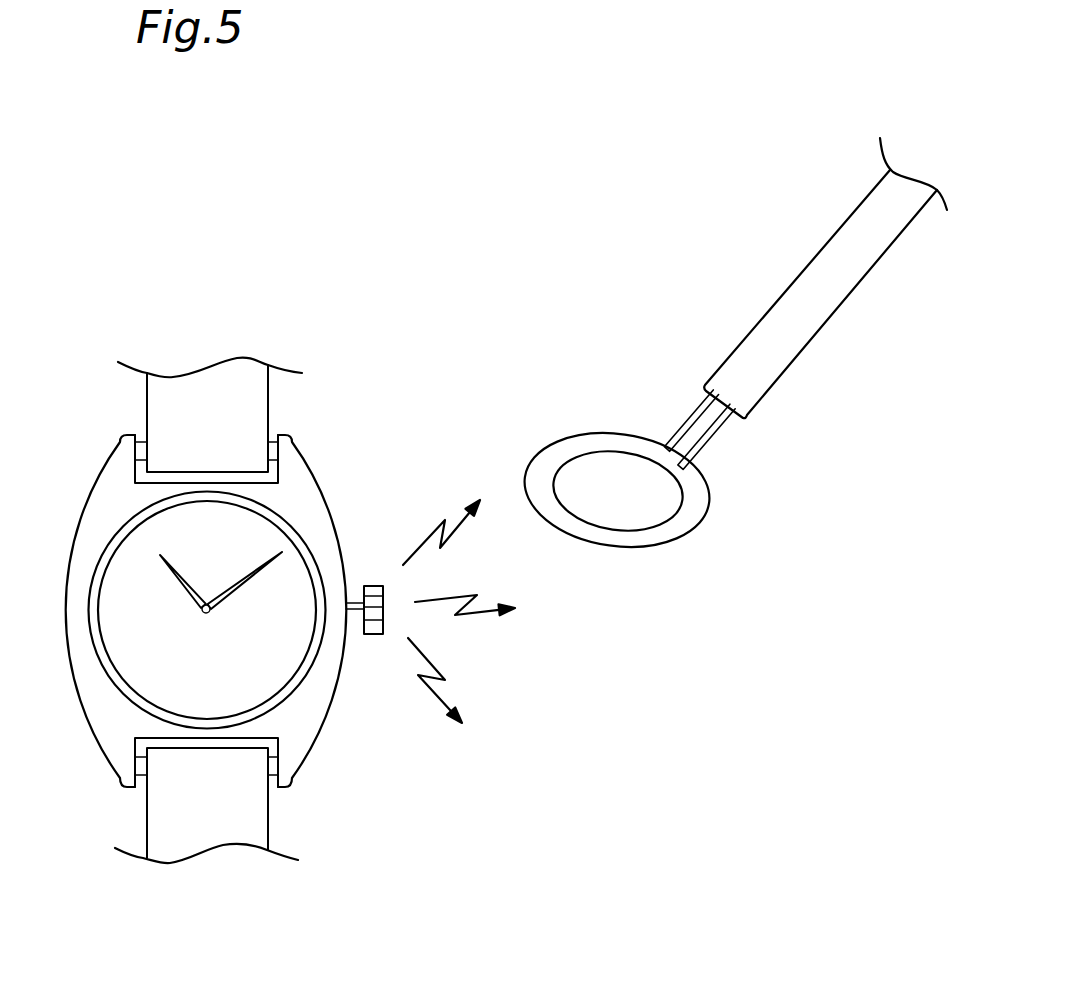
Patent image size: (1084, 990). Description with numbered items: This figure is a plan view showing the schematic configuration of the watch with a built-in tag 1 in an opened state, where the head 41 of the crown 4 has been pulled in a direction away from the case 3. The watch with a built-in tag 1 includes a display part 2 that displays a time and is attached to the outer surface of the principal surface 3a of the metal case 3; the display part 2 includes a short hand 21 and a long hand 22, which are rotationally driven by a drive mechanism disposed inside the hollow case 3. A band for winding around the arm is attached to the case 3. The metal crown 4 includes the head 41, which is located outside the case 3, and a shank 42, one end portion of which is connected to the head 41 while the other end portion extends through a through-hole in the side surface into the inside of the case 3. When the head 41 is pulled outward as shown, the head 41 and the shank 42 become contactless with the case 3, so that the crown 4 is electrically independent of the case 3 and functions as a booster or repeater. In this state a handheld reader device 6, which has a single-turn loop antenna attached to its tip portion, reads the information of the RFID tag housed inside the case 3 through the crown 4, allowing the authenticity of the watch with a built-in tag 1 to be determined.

The watch with a built-in tag 1 is at (48, 395).
The display part 2 is at (248, 533).
The case 3 is at (322, 535).
The principal surface 3a is at (127, 562).
The crown 4 is at (367, 623).
The reader device 6 is at (802, 293).
The short hand 21 is at (170, 573).
The long hand 22 is at (242, 580).
The head 41 is at (375, 634).
The shank 42 is at (355, 610).